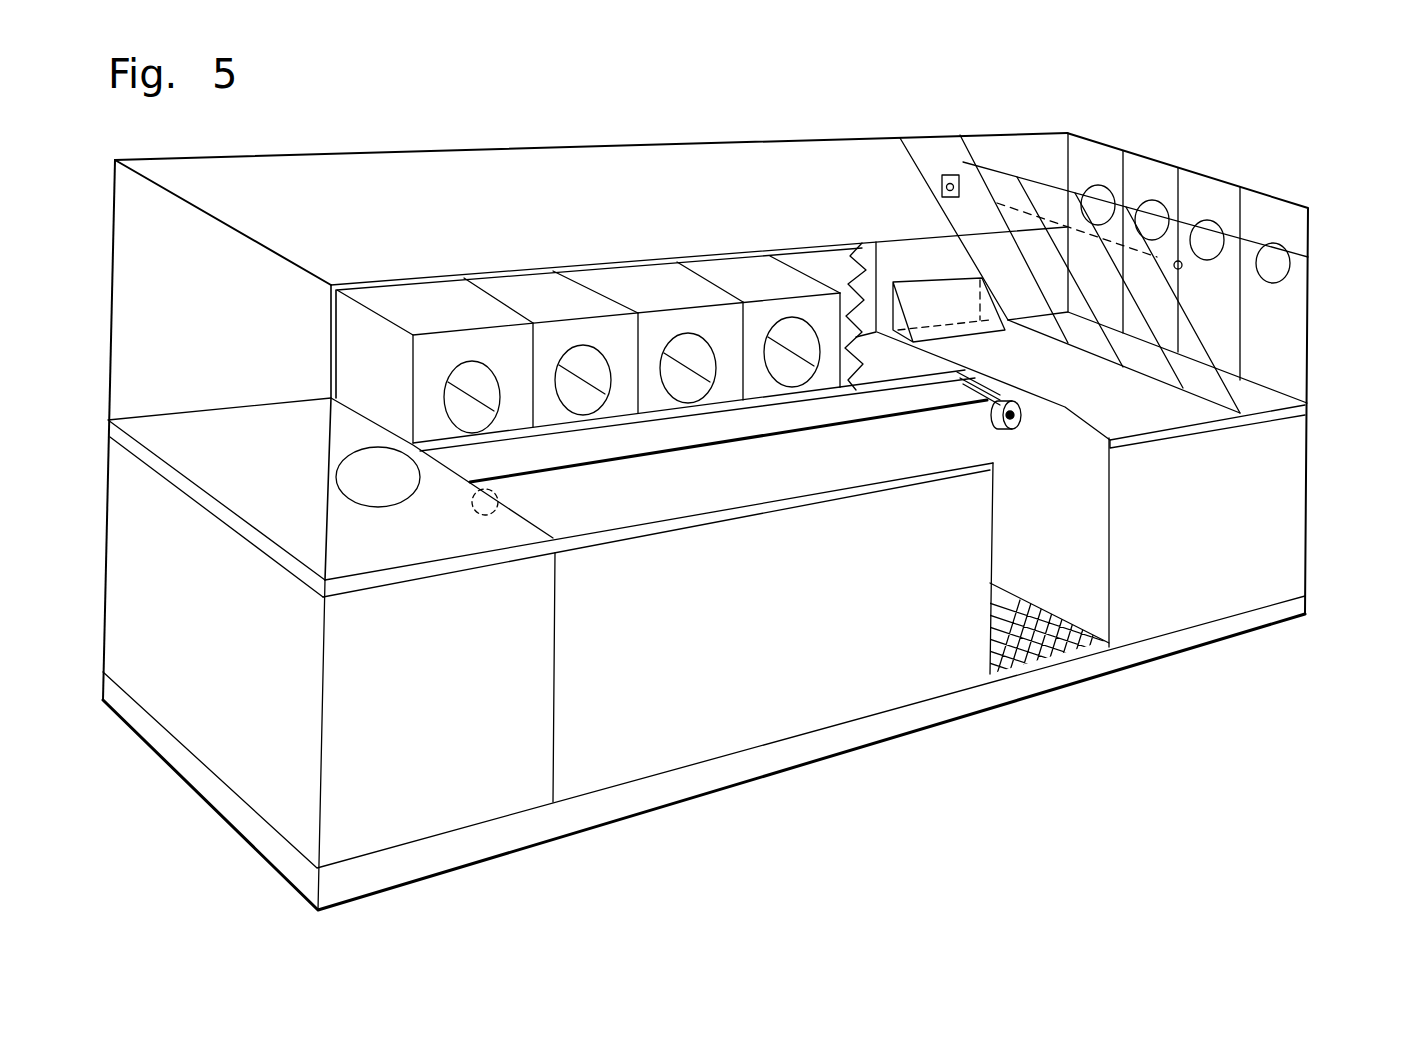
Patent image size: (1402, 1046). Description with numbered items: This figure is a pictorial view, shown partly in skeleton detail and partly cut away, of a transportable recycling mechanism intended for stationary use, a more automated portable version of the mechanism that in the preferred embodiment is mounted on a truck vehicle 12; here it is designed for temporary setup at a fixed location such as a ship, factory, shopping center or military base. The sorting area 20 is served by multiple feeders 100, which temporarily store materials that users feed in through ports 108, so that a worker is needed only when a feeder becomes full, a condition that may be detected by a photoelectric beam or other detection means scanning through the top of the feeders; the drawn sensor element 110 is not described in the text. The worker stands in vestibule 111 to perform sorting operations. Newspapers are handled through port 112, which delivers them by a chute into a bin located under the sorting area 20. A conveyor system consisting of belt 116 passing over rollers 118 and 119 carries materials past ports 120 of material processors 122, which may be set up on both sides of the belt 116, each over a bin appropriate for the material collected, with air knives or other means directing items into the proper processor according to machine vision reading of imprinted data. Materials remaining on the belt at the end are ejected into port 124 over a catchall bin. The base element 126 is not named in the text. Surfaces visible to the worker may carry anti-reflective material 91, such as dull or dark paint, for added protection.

The truck vehicle 12 is at (450, 373).
The sorting area 20 is at (1150, 402).
The anti-reflective material 91 is at (207, 430).
The feeders 100 is at (1083, 150).
The ports 108 is at (1090, 208).
The sensor 110 is at (952, 175).
The vestibule 111 is at (1057, 550).
The port 112 is at (910, 293).
The belt 116 is at (772, 435).
The roller 118 is at (1017, 430).
The roller 119 is at (477, 517).
The ports 120 is at (683, 330).
The material processors 122 is at (369, 293).
The port 124 is at (404, 492).
The base 126 is at (437, 823).